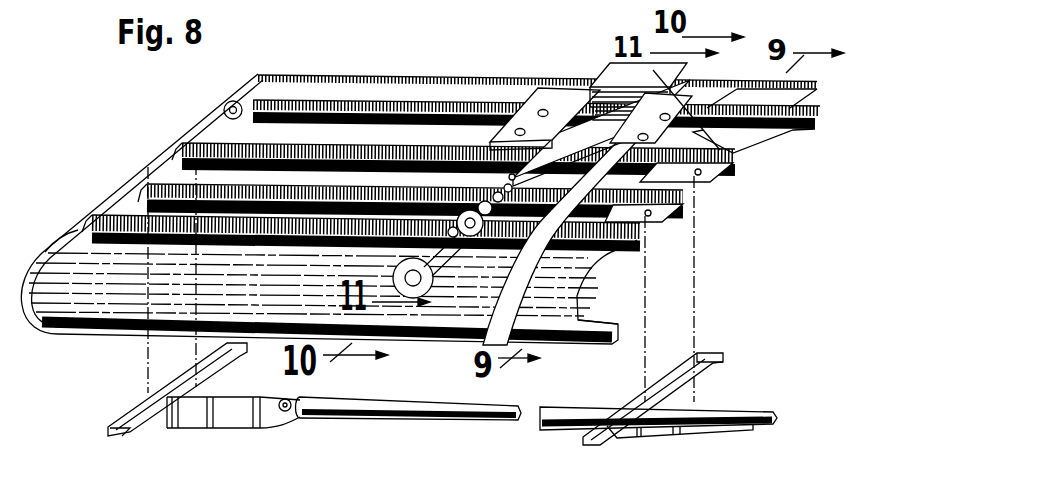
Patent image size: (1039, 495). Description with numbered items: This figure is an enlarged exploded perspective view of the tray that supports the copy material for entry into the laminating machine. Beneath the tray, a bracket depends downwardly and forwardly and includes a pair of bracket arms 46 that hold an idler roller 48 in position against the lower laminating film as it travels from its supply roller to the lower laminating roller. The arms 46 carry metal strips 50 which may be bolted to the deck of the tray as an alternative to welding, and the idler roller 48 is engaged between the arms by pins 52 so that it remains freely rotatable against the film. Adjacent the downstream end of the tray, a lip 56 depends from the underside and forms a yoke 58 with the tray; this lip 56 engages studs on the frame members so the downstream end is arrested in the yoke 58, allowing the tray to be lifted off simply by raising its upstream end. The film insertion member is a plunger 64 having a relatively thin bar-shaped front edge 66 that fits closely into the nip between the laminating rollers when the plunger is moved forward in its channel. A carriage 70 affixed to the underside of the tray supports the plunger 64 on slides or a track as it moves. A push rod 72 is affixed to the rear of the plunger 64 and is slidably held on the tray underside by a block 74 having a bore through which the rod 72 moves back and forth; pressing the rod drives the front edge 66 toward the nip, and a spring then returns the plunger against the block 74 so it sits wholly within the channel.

The bracket arms 46 is at (203, 410).
The idler roller 48 is at (453, 418).
The metal strips 50 is at (207, 372).
The pins 52 is at (287, 411).
The lip 56 is at (245, 100).
The yoke 58 is at (224, 110).
The plunger 64 is at (606, 70).
The bar-shaped front edge 66 is at (733, 154).
The carriage 70 is at (530, 110).
The push rod 72 is at (442, 265).
The block 74 is at (683, 203).